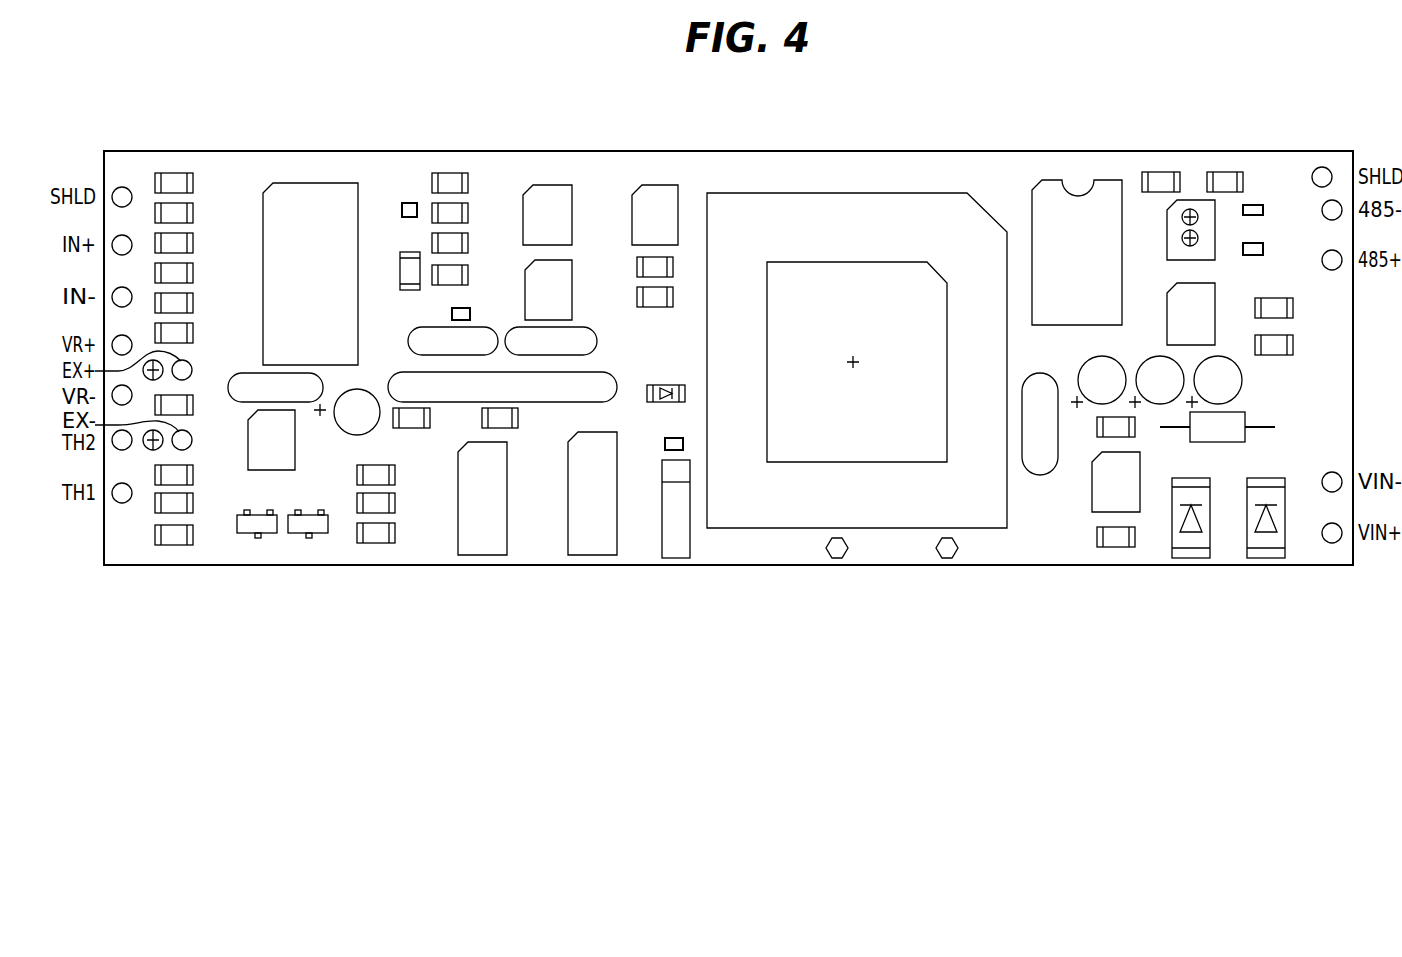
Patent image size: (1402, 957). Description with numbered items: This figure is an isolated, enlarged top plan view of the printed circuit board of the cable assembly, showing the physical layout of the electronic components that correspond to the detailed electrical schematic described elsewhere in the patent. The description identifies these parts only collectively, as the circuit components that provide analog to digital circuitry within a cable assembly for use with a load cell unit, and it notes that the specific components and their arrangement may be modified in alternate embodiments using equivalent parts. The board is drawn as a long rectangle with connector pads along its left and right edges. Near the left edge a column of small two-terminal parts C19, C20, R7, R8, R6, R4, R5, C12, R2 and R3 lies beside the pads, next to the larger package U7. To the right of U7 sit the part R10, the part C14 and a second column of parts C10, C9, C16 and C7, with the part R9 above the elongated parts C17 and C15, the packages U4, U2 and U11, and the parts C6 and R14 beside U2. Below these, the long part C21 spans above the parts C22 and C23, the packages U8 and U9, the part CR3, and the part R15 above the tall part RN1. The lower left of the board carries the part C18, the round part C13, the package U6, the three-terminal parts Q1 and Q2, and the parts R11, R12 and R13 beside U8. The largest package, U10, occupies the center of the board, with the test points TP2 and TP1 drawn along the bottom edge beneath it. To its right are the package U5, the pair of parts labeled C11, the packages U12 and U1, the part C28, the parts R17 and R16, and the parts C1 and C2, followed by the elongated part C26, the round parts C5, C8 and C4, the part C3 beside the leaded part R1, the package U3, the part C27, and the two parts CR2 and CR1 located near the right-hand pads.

The capacitor C19 is at (193, 182).
The capacitor C20 is at (193, 212).
The resistor R7 is at (188, 242).
The resistor R8 is at (188, 272).
The resistor R6 is at (188, 302).
The resistor R4 is at (188, 332).
The resistor R5 is at (188, 404).
The capacitor C12 is at (193, 474).
The resistor R2 is at (188, 502).
The resistor R3 is at (159, 534).
The integrated circuit U7 is at (310, 261).
The resistor R10 is at (391, 209).
The capacitor C14 is at (391, 271).
The capacitor C10 is at (469, 182).
The capacitor C9 is at (464, 212).
The capacitor C16 is at (469, 242).
The capacitor C7 is at (464, 274).
The resistor R9 is at (447, 317).
The capacitor C17 is at (453, 341).
The capacitor C15 is at (551, 341).
The integrated circuit U4 is at (547, 201).
The integrated circuit U2 is at (575, 298).
The integrated circuit U11 is at (655, 201).
The capacitor C6 is at (641, 266).
The resistor R14 is at (636, 296).
The diode CR3 is at (666, 380).
The capacitor C21 is at (502, 387).
The capacitor C22 is at (431, 417).
The capacitor C23 is at (520, 417).
The integrated circuit U8 is at (454, 495).
The integrated circuit U9 is at (592, 480).
The resistor R15 is at (653, 444).
The resistor network RN1 is at (656, 509).
The integrated circuit (microcontroller) U10 is at (857, 347).
The test point TP2 is at (816, 547).
The test point TP1 is at (966, 547).
The integrated circuit U5 is at (1065, 242).
The capacitor C11 is at (1173, 175).
The integrated circuit U12 is at (1173, 230).
The capacitor C28 is at (1304, 172).
The resistor R17 is at (1271, 209).
The resistor R16 is at (1271, 248).
The integrated circuit U1 is at (1176, 314).
The capacitor C1 is at (1274, 294).
The capacitor C2 is at (1274, 358).
The capacitor C26 is at (1040, 424).
The capacitor C5 is at (1098, 382).
The capacitor C8 is at (1156, 382).
The capacitor C4 is at (1214, 382).
The capacitor C3 is at (1102, 426).
The resistor R1 is at (1217, 427).
The integrated circuit U3 is at (1101, 482).
The capacitor C27 is at (1096, 536).
The diode CR2 is at (1191, 504).
The diode CR1 is at (1266, 504).
The capacitor C13 is at (346, 425).
The capacitor C18 is at (275, 387).
The integrated circuit U6 is at (271, 456).
The transistor Q1 is at (252, 536).
The transistor Q2 is at (312, 536).
The resistor R11 is at (394, 474).
The resistor R12 is at (394, 502).
The resistor R13 is at (394, 532).